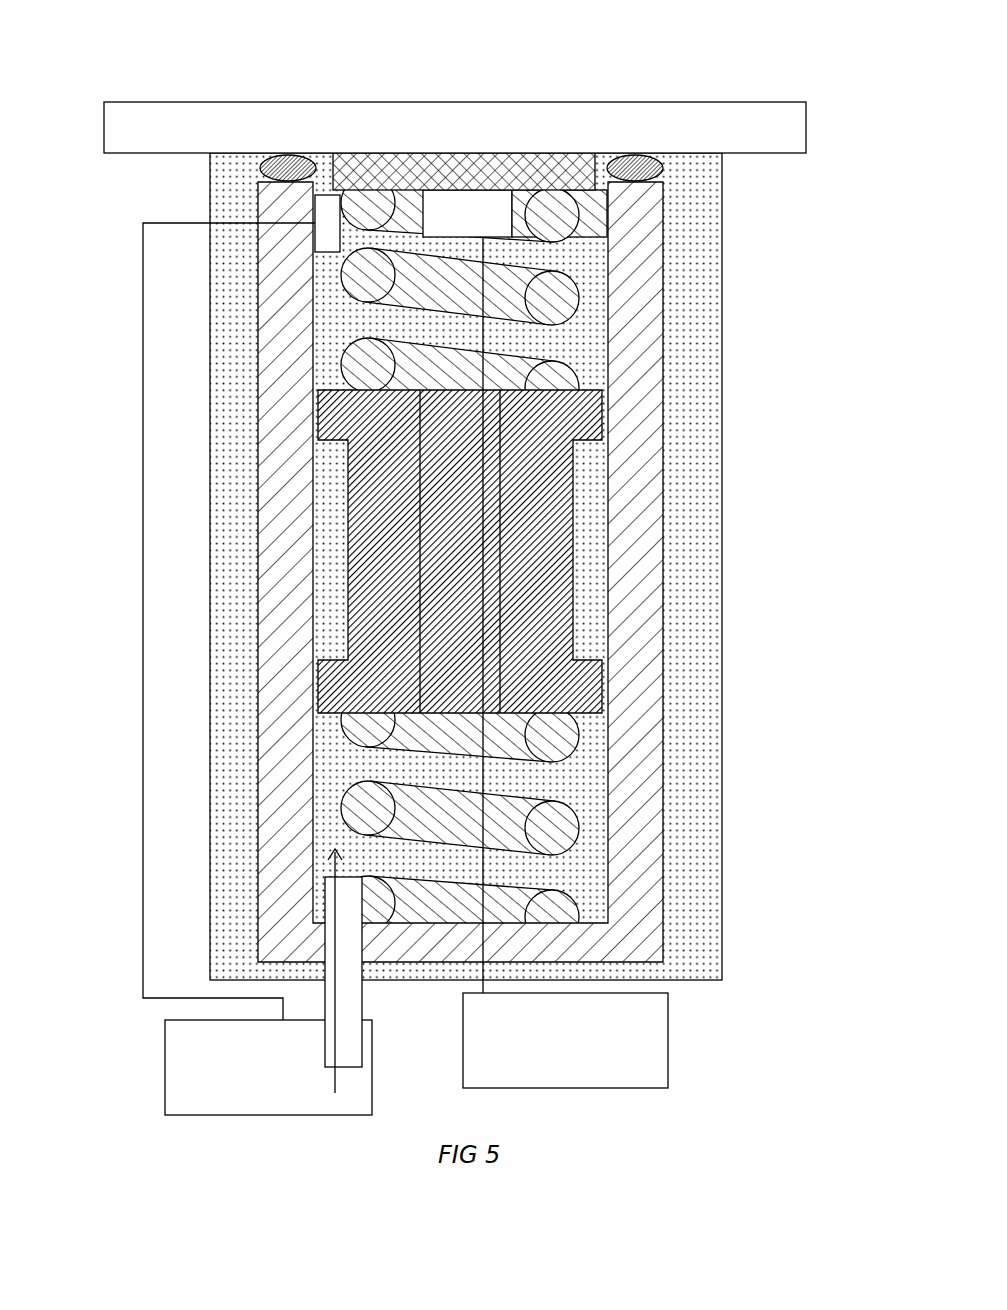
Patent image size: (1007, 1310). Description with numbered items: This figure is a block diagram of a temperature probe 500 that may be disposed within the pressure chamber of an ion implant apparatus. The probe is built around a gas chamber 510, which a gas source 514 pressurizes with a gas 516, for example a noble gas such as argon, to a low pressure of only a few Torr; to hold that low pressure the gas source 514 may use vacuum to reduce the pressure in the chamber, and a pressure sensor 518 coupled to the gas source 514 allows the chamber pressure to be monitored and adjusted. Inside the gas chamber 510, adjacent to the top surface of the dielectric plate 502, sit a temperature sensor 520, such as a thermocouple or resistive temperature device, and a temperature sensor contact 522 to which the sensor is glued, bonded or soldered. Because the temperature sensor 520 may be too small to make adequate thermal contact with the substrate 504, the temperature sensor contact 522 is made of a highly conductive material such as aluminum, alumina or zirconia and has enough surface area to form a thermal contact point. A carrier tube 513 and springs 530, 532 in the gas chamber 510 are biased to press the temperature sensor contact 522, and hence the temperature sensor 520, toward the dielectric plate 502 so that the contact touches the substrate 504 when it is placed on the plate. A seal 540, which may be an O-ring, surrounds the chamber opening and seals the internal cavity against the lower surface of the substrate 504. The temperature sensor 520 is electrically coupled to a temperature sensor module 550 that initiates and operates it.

The temperature probe 500 is at (180, 34).
The dielectric plate 502 is at (675, 223).
The substrate 504 is at (181, 136).
The gas chamber 510 is at (640, 748).
The carrier tube 513 is at (588, 413).
The gas source 514 is at (163, 1043).
The gas 516 is at (223, 1052).
The pressure sensor 518 is at (325, 238).
The temperature sensor 520 is at (500, 207).
The temperature sensor contact 522 is at (432, 165).
The spring 530 is at (560, 825).
The spring 532 is at (560, 290).
The seal 540 is at (640, 156).
The temperature sensor module 550 is at (565, 662).